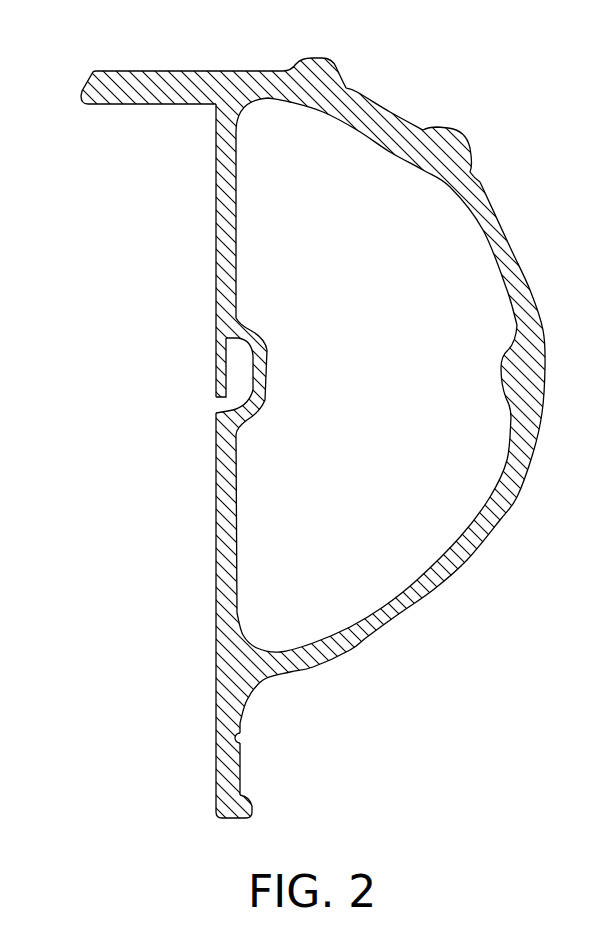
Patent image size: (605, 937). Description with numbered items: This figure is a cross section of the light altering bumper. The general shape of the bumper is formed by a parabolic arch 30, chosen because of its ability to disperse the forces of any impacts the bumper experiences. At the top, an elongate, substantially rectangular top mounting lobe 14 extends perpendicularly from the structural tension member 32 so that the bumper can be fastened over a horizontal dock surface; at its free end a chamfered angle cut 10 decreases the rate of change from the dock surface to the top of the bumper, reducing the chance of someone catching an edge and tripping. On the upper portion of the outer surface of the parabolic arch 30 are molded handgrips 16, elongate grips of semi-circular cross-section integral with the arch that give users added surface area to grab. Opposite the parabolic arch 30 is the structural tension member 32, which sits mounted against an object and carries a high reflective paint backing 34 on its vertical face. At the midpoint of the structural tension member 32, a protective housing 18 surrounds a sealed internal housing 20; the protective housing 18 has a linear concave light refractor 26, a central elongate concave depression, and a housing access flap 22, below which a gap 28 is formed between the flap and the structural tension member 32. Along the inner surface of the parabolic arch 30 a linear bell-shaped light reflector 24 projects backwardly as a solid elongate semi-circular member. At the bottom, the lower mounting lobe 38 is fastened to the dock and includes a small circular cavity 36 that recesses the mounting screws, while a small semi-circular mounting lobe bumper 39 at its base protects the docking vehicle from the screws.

The chamfered angle cut 10 is at (88, 80).
The top mounting lobe 14 is at (164, 84).
The molded handgrip 16 is at (322, 57).
The protective housing 18 is at (250, 331).
The sealed internal housing 20 is at (262, 343).
The housing access flap 22 is at (220, 370).
The linear bell-shaped light reflector 24 is at (503, 368).
The linear concave light refractor 26 is at (268, 373).
The gap 28 is at (222, 404).
The parabolic arch 30 is at (482, 563).
The structural tension member 32 is at (238, 512).
The high reflective paint backing 34 is at (216, 558).
The small circular cavity 36 is at (243, 740).
The lower mounting lobe 38 is at (243, 773).
The mounting lobe bumper 39 is at (254, 808).